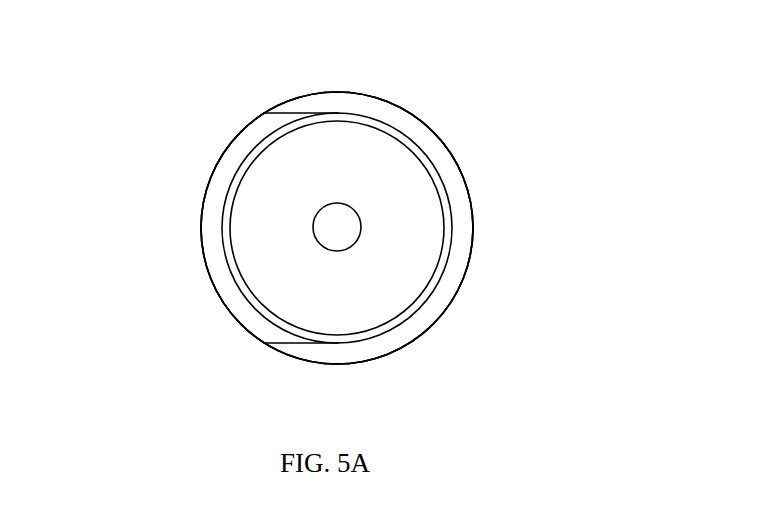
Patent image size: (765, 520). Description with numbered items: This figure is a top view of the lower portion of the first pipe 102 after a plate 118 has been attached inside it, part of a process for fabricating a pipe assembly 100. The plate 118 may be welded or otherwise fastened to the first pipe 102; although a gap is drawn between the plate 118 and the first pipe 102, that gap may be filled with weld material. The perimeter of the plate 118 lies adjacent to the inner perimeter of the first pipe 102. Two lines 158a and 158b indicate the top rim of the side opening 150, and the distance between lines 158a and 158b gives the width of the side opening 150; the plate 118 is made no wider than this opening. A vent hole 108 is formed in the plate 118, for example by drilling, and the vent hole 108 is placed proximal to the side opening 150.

The device 100 is at (547, 97).
The first pipe 102 is at (460, 228).
The plate 118 is at (398, 163).
The line 158a is at (278, 344).
The line 158b is at (276, 112).
The vent hole 108 is at (342, 221).
The side opening 150 is at (172, 228).